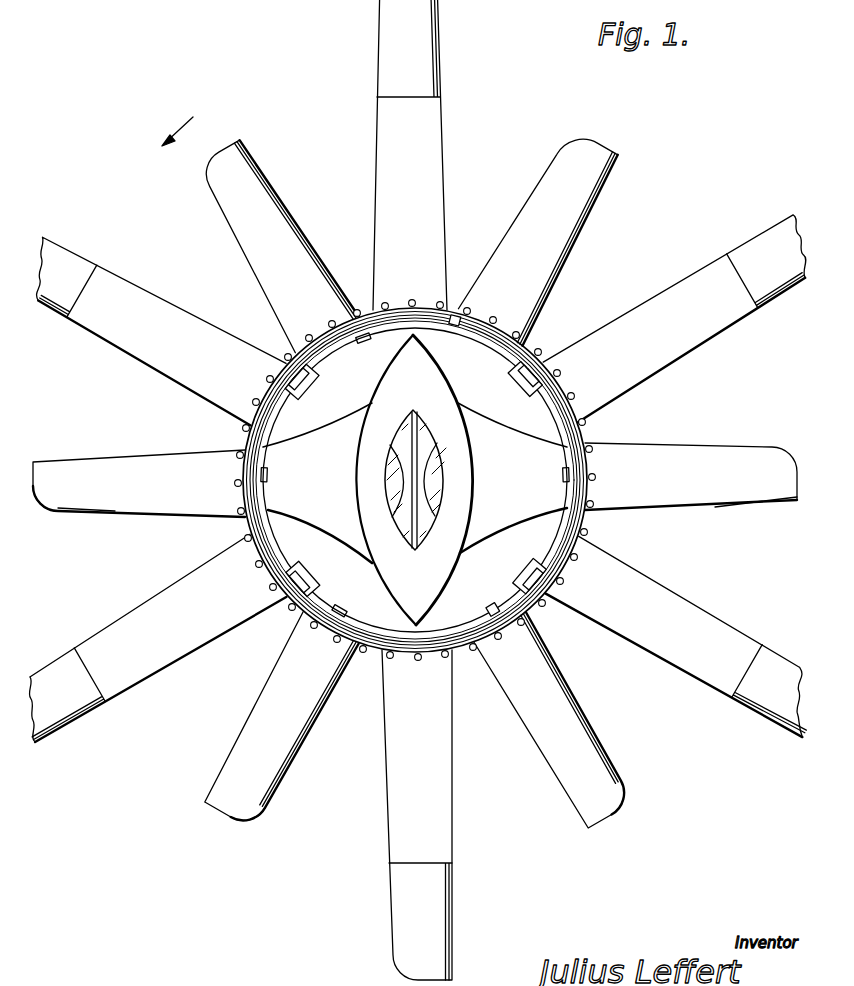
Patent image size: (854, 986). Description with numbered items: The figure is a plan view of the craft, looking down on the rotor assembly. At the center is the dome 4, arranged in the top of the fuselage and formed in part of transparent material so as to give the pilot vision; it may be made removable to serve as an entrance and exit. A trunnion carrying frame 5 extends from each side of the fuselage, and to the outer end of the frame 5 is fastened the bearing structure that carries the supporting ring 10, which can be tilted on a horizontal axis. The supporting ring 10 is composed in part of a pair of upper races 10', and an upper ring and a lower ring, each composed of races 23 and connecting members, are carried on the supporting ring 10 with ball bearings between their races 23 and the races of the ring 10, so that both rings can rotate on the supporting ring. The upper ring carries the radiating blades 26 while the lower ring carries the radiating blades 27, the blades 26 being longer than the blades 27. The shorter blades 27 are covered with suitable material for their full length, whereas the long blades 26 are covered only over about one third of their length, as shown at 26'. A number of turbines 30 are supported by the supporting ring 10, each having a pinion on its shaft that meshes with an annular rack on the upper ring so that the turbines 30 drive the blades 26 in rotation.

The dome 4 is at (433, 490).
The trunnion carrying frame 5 is at (490, 423).
The supporting ring 10 is at (486, 595).
The upper races 10' is at (516, 319).
The races 23 is at (587, 430).
The radiating blades 26 is at (416, 490).
The covered portion of the long blades 26' is at (418, 490).
The radiating blades 27 is at (718, 452).
The turbines 30 is at (560, 377).